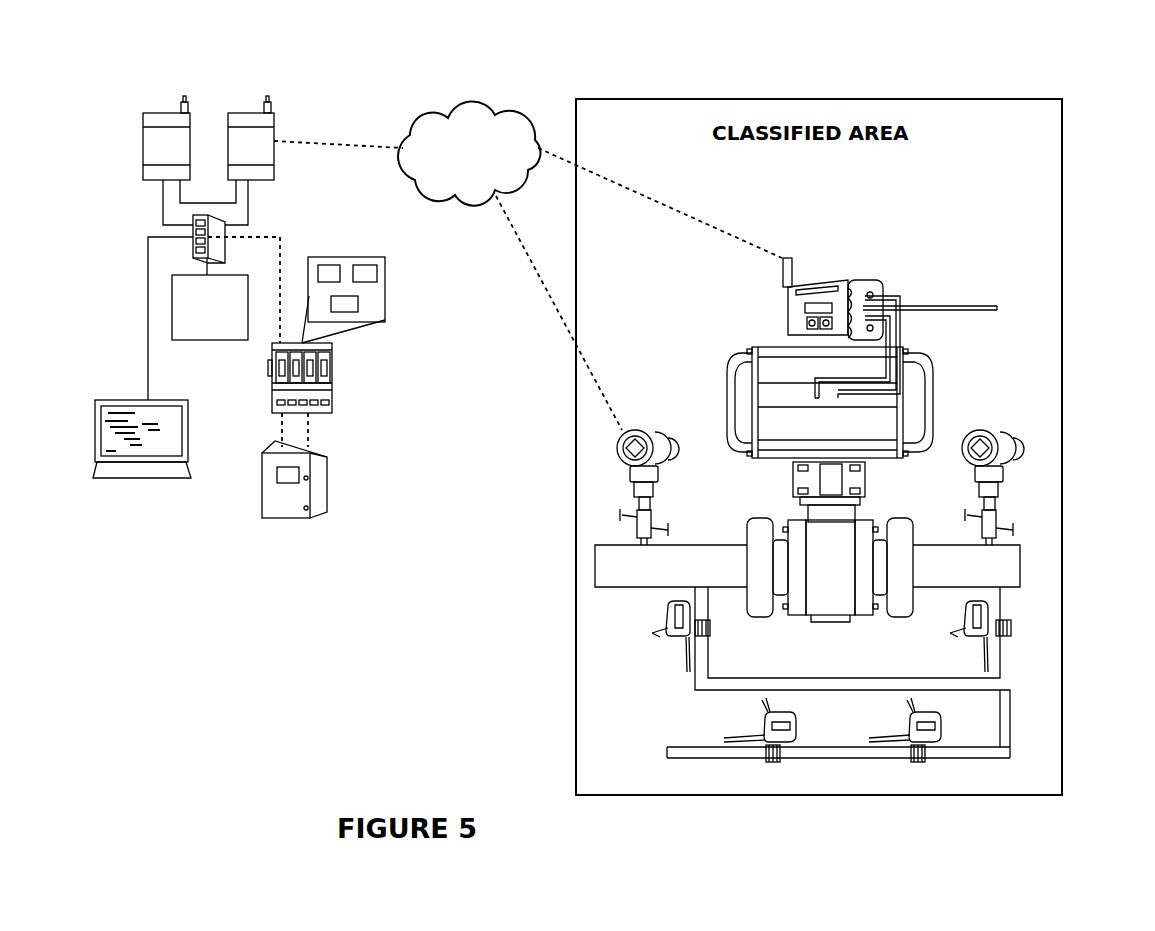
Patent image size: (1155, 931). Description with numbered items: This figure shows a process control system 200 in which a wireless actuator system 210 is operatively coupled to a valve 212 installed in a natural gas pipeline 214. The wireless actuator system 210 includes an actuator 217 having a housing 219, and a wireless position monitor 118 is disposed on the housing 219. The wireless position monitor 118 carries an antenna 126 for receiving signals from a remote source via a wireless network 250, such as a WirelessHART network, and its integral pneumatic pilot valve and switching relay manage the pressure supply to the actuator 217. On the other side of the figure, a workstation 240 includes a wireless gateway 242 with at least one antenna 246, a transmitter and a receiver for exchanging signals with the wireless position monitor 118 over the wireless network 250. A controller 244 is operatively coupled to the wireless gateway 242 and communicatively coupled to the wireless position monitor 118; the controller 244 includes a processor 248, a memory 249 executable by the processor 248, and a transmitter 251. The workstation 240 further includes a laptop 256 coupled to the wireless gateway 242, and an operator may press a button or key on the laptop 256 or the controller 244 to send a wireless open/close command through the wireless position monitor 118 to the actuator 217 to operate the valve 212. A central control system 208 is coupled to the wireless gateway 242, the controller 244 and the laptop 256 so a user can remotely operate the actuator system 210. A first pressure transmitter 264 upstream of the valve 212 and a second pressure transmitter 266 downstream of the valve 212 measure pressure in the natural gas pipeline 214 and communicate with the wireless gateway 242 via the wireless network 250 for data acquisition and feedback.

The process control system 200 is at (524, 72).
The wireless gateway 242 is at (143, 130).
The antenna 246 is at (187, 108).
The workstation 240 is at (102, 342).
The central control system 208 is at (200, 340).
The laptop 256 is at (174, 400).
The processor 248 is at (358, 304).
The memory 249 is at (329, 265).
The transmitter 251 is at (370, 265).
The controller 244 is at (332, 370).
The wireless network 250 is at (469, 154).
The antenna 126 is at (794, 262).
The wireless position monitor 118 is at (827, 283).
The wireless actuator system 210 is at (708, 330).
The housing 219 is at (762, 350).
The actuator 217 is at (940, 378).
The valve 212 is at (842, 628).
The natural gas pipeline 214 is at (625, 590).
The first pressure transmitter 264 is at (650, 430).
The second pressure transmitter 266 is at (996, 430).